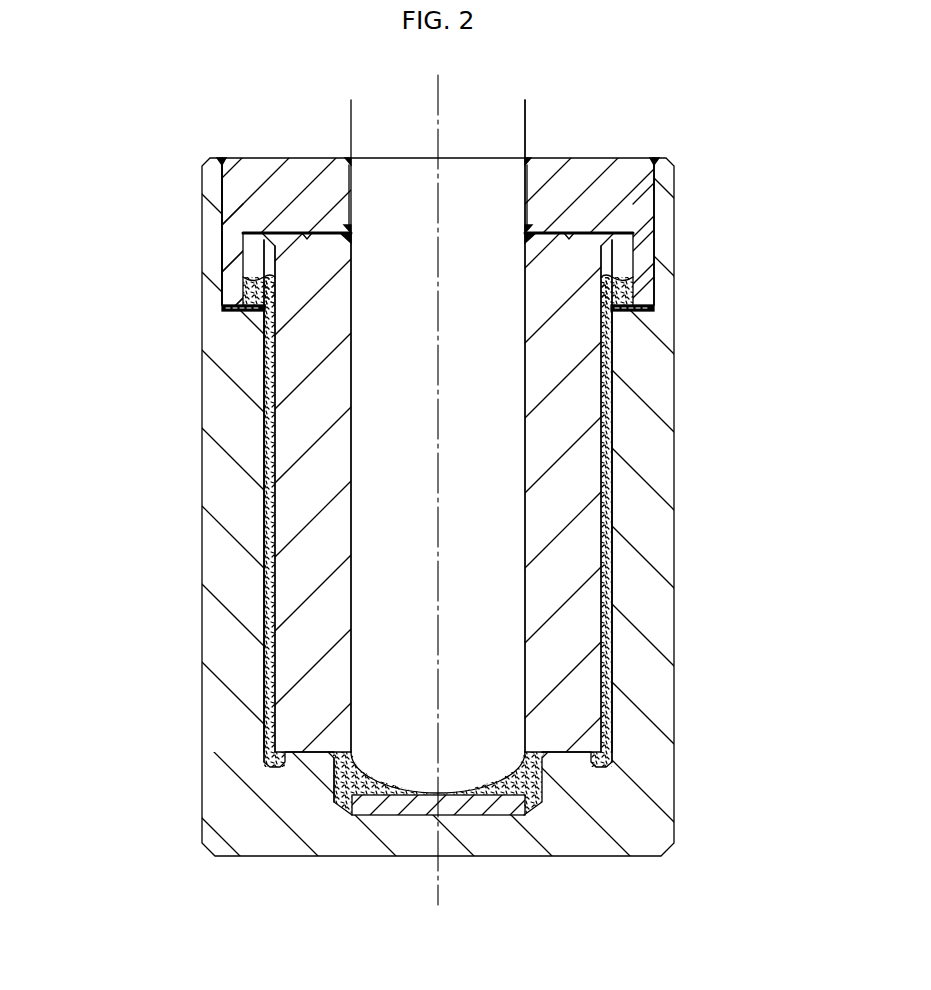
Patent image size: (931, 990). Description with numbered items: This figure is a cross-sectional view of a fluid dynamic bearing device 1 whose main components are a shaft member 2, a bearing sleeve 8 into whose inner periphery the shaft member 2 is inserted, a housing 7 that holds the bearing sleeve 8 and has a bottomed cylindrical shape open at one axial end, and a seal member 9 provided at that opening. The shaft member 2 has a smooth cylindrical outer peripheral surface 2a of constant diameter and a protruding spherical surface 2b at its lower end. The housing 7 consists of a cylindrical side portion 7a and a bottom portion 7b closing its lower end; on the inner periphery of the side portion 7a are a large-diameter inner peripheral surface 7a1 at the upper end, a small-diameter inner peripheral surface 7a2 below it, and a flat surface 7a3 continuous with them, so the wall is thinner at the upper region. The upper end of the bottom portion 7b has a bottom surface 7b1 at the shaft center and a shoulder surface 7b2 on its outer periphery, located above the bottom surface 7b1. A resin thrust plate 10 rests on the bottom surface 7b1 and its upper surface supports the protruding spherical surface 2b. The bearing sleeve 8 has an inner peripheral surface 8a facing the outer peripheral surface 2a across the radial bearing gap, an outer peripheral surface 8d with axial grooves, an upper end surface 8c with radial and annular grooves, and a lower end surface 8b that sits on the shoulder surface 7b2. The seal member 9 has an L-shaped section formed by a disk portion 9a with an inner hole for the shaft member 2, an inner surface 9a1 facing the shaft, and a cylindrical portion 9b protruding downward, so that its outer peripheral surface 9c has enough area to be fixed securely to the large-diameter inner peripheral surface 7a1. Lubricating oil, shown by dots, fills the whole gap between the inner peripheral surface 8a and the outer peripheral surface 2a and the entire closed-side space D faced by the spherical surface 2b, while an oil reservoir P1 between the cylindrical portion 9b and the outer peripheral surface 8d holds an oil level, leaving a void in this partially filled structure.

The fluid dynamic bearing device 1 is at (652, 102).
The shaft member 2 is at (532, 120).
The outer peripheral surface 2a is at (527, 387).
The protruding spherical surface 2b is at (511, 790).
The housing 7 is at (684, 545).
The side portion 7a is at (655, 606).
The large-diameter inner peripheral surface 7a1 is at (653, 205).
The small-diameter inner peripheral surface 7a2 is at (607, 437).
The flat surface 7a3 is at (636, 307).
The bottom portion 7b is at (417, 843).
The bottom surface 7b1 is at (392, 811).
The shoulder surface 7b2 is at (312, 752).
The bearing sleeve 8 is at (290, 419).
The inner peripheral surface 8a is at (352, 497).
The lower end surface 8b is at (312, 752).
The upper end surface 8c is at (284, 233).
The outer peripheral surface 8d is at (268, 612).
The seal member 9 is at (261, 150).
The disk portion 9a is at (303, 176).
The inner peripheral surface of retaining ring 9a1 is at (353, 185).
The cylindrical portion 9b is at (232, 283).
The outer peripheral surface 9c is at (222, 191).
The thrust plate 10 is at (470, 808).
The oil reservoir P1 is at (252, 265).
The space D is at (338, 786).